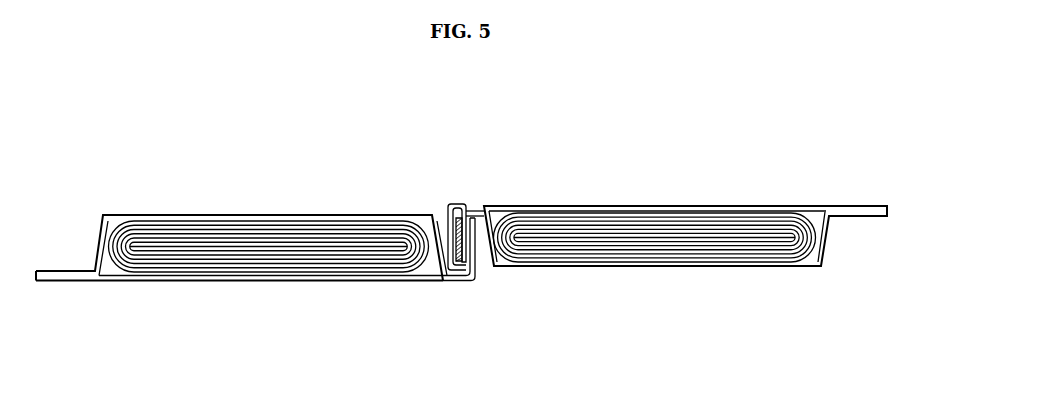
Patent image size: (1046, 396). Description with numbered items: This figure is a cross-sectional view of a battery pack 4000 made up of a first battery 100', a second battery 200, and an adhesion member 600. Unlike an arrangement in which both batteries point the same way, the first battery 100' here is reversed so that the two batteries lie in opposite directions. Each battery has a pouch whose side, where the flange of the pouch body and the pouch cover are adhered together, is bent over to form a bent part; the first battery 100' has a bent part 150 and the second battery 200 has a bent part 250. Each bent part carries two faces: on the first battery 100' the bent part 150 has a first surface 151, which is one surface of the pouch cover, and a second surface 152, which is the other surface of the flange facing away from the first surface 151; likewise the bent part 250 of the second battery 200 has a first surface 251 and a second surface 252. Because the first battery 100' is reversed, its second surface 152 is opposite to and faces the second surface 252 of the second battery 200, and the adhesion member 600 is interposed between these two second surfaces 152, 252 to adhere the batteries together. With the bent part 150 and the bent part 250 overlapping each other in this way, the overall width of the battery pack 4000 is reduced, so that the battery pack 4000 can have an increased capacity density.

The battery pack 4000 is at (88, 118).
The second battery 200 is at (272, 208).
The first battery 100' is at (685, 201).
The bent part 150 is at (468, 153).
The first surface 151 is at (447, 212).
The second surface 152 is at (464, 213).
The adhesion member 600 is at (464, 226).
The bent part 250 is at (500, 340).
The first surface 251 is at (475, 266).
The second surface 252 is at (450, 252).